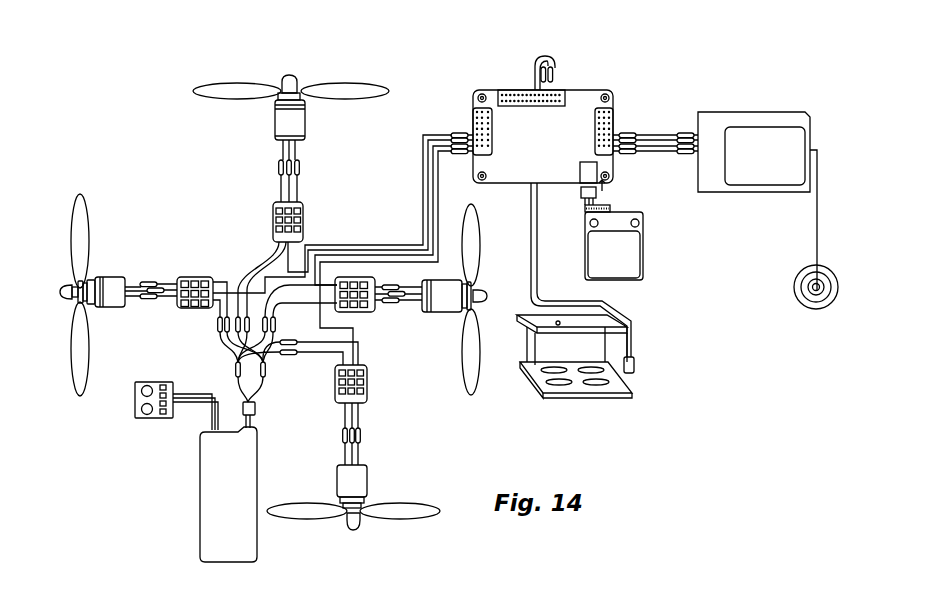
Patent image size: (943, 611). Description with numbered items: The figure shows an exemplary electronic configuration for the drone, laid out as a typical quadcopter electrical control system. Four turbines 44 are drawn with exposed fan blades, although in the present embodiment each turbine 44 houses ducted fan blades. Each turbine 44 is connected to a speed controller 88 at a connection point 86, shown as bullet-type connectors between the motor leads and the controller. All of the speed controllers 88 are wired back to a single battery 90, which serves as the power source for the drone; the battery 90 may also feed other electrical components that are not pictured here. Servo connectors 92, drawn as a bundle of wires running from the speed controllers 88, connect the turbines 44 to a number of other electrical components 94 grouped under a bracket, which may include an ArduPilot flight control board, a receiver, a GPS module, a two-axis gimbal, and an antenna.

The turbine 44 is at (110, 276).
The connection point 86 is at (150, 280).
The speed controller 88 is at (203, 276).
The battery 90 is at (212, 498).
The servo connectors 92 is at (423, 176).
The other electrical components 94 is at (823, 60).